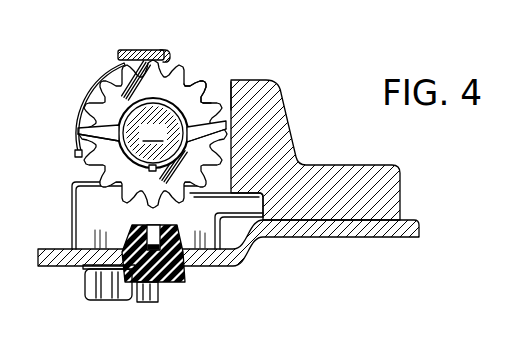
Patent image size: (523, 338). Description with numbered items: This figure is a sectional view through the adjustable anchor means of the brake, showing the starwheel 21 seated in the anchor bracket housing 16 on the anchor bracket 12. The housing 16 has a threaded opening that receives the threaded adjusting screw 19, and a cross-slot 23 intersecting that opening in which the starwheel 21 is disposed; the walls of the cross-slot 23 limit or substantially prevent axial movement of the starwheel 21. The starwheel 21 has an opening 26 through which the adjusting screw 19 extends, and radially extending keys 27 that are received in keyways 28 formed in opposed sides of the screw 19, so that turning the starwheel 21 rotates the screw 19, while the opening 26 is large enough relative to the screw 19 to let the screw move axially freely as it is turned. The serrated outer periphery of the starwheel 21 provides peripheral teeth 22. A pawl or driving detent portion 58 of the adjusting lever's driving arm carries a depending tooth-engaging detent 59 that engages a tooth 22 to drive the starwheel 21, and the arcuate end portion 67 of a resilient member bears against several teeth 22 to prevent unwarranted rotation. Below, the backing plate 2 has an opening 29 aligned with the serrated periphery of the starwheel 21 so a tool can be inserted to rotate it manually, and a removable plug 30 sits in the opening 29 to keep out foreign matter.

The backing plate 2 is at (350, 231).
The anchor bracket 12 is at (390, 198).
The anchor bracket housing 16 is at (270, 92).
The adjusting screw 19 is at (152, 134).
The starwheel 21 is at (108, 82).
The peripheral teeth 22 is at (206, 78).
The cross-slot 23 is at (230, 92).
The opening 26 is at (128, 195).
The keys 27 is at (80, 131).
The keyways 28 is at (95, 148).
The opening 29 is at (196, 272).
The removable plug 30 is at (167, 285).
The pawl or driving detent portion 58 is at (135, 48).
The tooth-engaging detent 59 is at (162, 53).
The arcuate end portion 67 is at (88, 93).